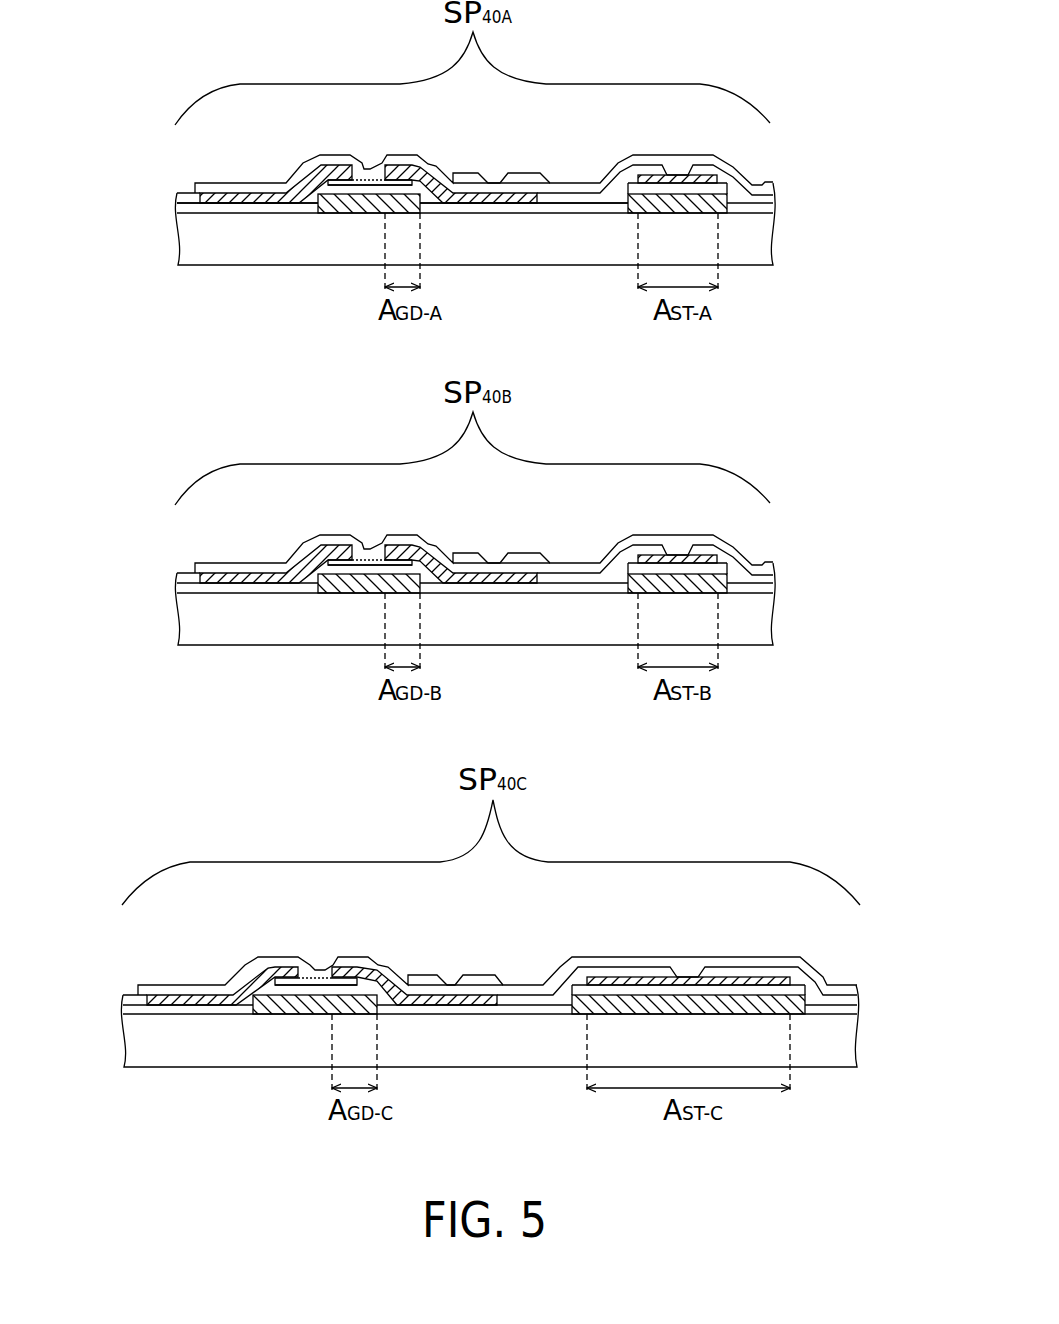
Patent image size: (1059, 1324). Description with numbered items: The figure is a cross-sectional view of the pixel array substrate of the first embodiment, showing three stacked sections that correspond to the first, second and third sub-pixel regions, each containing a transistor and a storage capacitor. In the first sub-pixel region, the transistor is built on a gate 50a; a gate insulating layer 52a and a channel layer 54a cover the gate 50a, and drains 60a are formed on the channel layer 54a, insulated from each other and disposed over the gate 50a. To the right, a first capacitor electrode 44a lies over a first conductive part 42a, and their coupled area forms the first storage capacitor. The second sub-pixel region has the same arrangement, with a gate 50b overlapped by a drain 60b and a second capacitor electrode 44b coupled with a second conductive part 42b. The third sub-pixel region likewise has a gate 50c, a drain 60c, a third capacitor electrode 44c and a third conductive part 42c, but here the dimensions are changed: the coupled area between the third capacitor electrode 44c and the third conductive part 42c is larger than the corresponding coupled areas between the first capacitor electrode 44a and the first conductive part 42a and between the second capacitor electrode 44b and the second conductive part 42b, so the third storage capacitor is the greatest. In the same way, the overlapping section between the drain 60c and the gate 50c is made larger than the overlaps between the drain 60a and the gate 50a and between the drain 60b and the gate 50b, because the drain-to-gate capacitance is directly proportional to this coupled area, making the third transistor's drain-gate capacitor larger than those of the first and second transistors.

The gate 50a is at (320, 213).
The gate insulating layer 52a is at (220, 208).
The channel layer 54a is at (327, 181).
The drains 60a is at (397, 165).
The first capacitor electrode 44a is at (652, 175).
The first conductive part 42a is at (718, 194).
The gate 50b is at (318, 593).
The drain 60b is at (368, 530).
The second capacitor electrode 44b is at (669, 520).
The second conductive part 42b is at (682, 535).
The gate 50c is at (262, 1014).
The drain 60c is at (343, 967).
The third capacitor electrode 44c is at (626, 977).
The third conductive part 42c is at (741, 995).